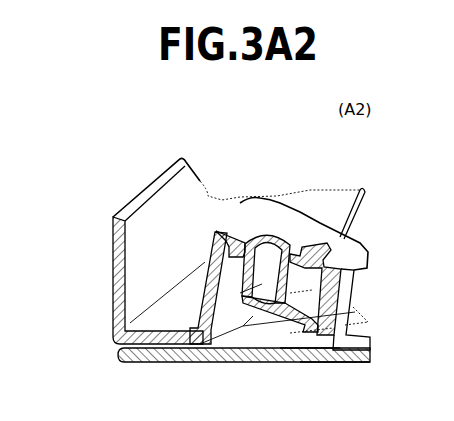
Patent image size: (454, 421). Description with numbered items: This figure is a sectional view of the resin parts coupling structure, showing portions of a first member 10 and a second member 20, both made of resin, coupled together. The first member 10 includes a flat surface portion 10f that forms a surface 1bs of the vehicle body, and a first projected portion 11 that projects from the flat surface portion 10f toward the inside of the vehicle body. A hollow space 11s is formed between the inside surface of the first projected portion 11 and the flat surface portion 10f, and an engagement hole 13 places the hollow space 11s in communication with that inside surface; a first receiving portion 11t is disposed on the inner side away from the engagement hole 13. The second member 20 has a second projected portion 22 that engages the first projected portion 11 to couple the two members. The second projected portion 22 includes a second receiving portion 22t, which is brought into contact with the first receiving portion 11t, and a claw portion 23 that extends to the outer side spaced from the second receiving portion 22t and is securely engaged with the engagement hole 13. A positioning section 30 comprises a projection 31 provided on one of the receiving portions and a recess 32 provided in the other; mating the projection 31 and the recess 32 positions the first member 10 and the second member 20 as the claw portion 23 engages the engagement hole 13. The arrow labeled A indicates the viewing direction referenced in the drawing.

The second member 20 is at (129, 201).
The second receiving portion 22t is at (213, 208).
The first projected portion 11 is at (235, 340).
The first receiving portion 11t is at (238, 232).
The projection 31 is at (266, 233).
The positioning section 30 is at (285, 224).
The recess 32 is at (304, 212).
The direction A is at (377, 219).
The second projected portion 22 is at (355, 245).
The engagement hole 13 is at (348, 332).
The claw portion 23 is at (310, 334).
The hollow space 11s is at (265, 342).
The first member 10 is at (367, 366).
The surface of the vehicle body 1bs is at (337, 364).
The flat surface portion 10f is at (307, 364).